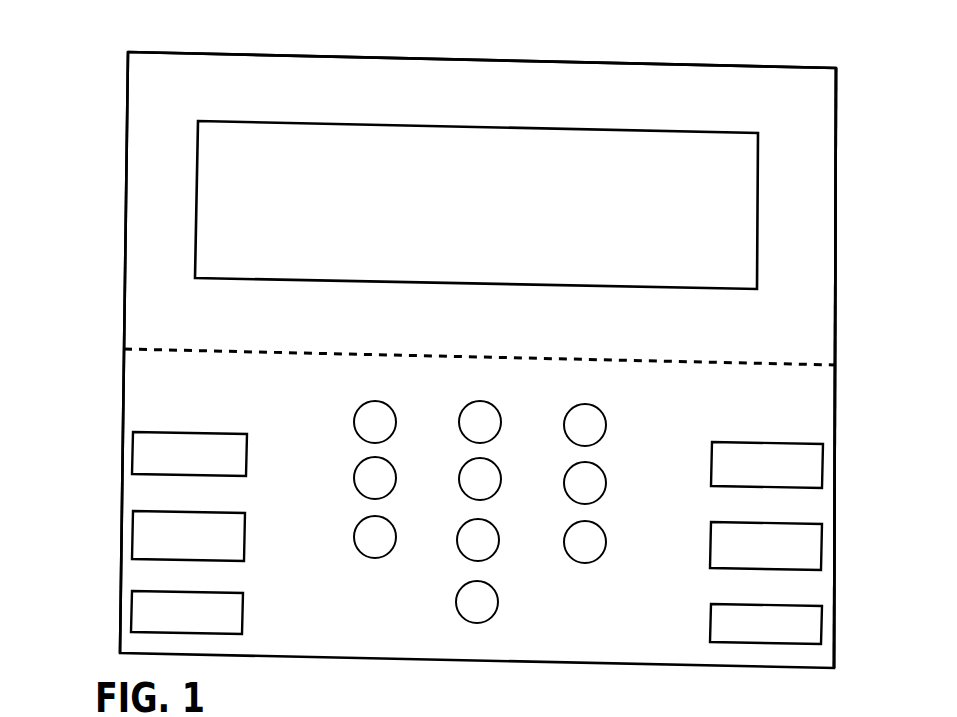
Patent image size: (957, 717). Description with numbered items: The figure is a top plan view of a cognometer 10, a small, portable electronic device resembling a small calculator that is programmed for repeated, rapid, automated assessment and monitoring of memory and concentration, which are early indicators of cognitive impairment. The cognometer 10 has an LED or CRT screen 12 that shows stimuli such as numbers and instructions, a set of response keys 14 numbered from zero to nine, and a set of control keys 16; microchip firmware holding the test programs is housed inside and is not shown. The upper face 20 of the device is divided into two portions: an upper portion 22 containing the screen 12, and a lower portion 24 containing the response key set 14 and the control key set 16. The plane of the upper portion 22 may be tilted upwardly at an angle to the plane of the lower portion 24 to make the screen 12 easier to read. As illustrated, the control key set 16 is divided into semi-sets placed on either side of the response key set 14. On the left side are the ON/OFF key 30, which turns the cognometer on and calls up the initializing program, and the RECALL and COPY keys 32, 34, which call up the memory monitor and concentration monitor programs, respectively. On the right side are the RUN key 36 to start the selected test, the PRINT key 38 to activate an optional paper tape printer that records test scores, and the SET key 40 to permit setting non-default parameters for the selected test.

The cognometer 10 is at (145, 31).
The screen 12 is at (215, 181).
The response key set 14 is at (407, 606).
The control key set 16 is at (108, 519).
The upper face 20 is at (507, 59).
The upper portion 22 is at (836, 263).
The lower portion 24 is at (835, 417).
The ON/OFF key 30 is at (243, 622).
The RECALL key 32 is at (245, 542).
The COPY key 34 is at (247, 452).
The RUN key 36 is at (711, 623).
The PRINT key 38 is at (711, 547).
The SET key 40 is at (712, 466).